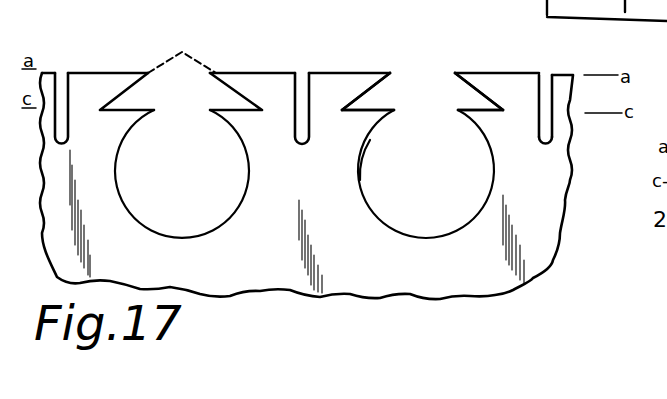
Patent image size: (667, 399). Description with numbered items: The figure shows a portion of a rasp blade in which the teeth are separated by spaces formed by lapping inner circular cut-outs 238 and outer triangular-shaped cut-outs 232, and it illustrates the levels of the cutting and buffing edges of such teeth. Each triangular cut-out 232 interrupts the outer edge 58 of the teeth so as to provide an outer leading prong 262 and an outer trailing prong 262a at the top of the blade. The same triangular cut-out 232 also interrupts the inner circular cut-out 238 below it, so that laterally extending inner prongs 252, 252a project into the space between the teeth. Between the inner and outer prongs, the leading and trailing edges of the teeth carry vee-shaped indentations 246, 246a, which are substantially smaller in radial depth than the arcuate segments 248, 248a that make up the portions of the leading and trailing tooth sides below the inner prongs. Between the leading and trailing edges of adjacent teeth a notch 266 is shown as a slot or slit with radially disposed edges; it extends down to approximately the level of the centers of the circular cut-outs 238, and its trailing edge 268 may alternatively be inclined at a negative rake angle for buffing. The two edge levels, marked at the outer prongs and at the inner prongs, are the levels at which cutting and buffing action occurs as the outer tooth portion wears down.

The outer edge 58 is at (258, 73).
The outer triangular-shaped cut-out 232 is at (212, 101).
The inner circular cut-out 238 is at (212, 206).
The vee-shaped indentation 246 is at (450, 80).
The vee-shaped indentation 246a is at (368, 100).
The arcuate segment 248 is at (490, 175).
The arcuate segment 248a is at (359, 180).
The inner prong 252 is at (470, 122).
The inner prong 252a is at (382, 120).
The outer leading prong 262 is at (466, 76).
The outer trailing prong 262a is at (382, 72).
The notch 266 is at (546, 77).
The trailing edge 268 is at (546, 106).